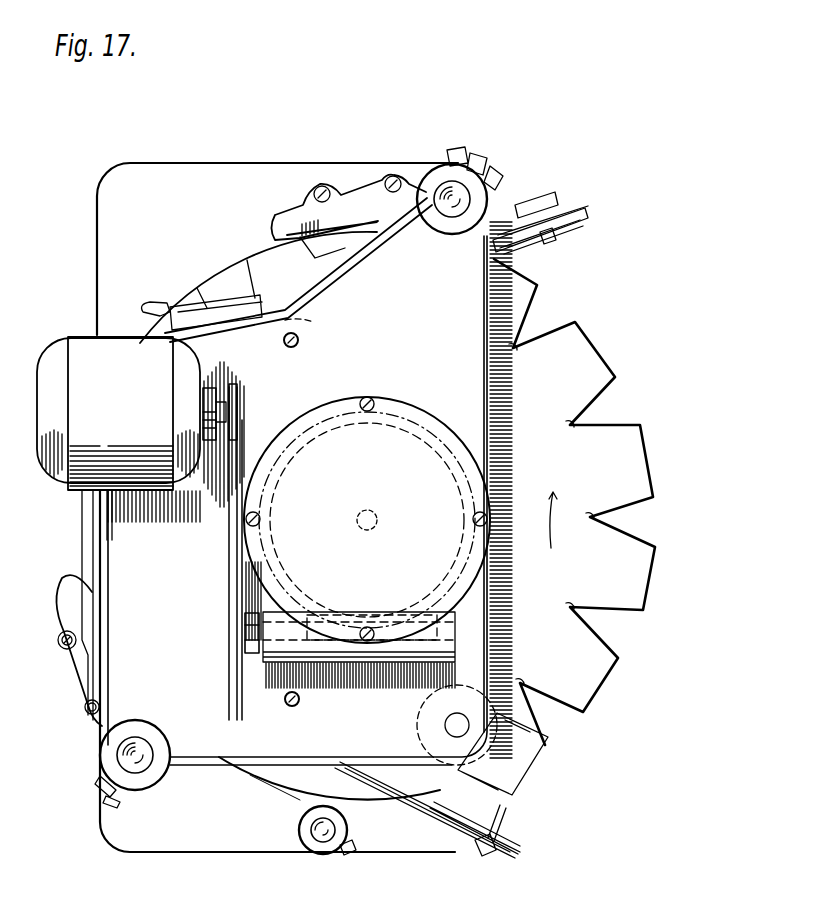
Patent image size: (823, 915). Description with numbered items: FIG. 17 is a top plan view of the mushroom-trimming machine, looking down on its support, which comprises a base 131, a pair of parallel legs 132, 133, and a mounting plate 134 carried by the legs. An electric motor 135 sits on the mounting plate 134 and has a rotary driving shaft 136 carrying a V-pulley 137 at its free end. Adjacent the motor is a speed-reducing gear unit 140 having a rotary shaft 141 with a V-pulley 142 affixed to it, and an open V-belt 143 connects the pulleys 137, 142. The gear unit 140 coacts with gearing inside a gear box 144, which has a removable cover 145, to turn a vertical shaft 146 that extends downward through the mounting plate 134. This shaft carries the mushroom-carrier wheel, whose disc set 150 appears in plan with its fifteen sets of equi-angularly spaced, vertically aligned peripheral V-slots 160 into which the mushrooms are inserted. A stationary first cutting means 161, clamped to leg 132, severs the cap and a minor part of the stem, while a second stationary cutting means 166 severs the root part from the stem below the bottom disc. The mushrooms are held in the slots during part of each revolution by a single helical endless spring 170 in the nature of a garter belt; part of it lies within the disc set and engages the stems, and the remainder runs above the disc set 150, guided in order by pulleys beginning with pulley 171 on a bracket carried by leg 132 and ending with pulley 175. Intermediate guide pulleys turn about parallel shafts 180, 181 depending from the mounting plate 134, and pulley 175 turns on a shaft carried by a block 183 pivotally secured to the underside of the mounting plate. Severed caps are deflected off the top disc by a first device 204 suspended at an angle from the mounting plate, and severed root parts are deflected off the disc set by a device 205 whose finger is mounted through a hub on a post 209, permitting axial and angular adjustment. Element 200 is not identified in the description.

The base 131 is at (106, 214).
The leg 132 is at (447, 192).
The leg 133 is at (145, 773).
The mounting plate 134 is at (118, 545).
The electric motor 135 is at (63, 348).
The rotary driving shaft 136 is at (224, 409).
The V-pulley 137 is at (238, 386).
The speed-reducing gear unit 140 is at (369, 670).
The rotary shaft 141 is at (280, 637).
The V-pulley 142 is at (233, 699).
The open V-belt 143 is at (228, 535).
The gear box 144 is at (385, 399).
The removable cover 145 is at (407, 410).
The vertical shaft 146 is at (383, 511).
The disc set 150 is at (254, 237).
The peripheral V-slots 160 is at (556, 306).
The first cutting means 161 is at (343, 180).
The second cutting means 166 is at (64, 671).
The helical endless spring 170 is at (591, 222).
The pulley 171 is at (586, 213).
The pulley 175 is at (500, 862).
The shaft 180 is at (283, 343).
The shaft 181 is at (290, 706).
The block 183 is at (515, 783).
The slide bar 200 is at (230, 273).
The first device 204 is at (156, 300).
The device 205 is at (283, 815).
The post 209 is at (317, 846).